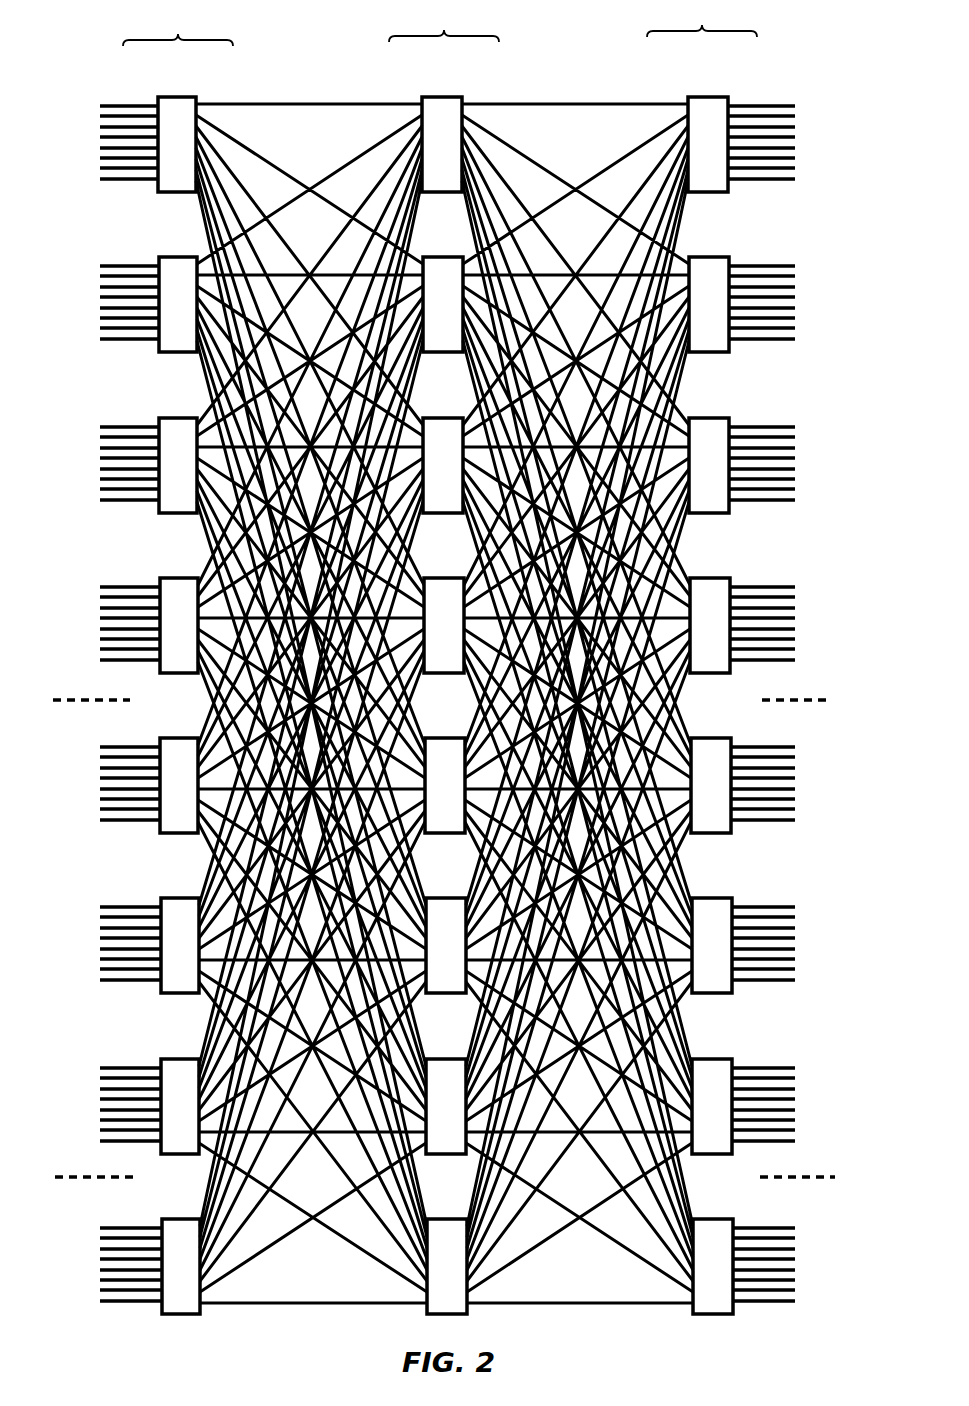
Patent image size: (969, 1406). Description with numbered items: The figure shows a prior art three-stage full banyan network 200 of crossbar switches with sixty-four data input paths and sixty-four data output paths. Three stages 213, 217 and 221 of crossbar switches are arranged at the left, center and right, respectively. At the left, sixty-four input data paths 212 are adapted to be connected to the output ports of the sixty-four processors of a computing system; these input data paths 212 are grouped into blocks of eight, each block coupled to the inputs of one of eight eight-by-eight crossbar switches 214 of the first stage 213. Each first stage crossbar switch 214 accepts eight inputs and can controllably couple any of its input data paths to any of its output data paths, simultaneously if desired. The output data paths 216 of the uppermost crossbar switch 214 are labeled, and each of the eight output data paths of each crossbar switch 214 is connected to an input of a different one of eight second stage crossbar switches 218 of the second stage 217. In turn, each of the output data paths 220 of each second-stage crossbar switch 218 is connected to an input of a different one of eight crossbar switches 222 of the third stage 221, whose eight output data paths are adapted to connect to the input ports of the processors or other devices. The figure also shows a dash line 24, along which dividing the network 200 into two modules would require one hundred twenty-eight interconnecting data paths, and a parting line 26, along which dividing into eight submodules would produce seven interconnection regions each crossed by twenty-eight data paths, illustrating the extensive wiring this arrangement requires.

The banyan network 200 is at (817, 1109).
The input data paths 212 is at (100, 107).
The first stage 213 is at (171, 659).
The first stage crossbar switch 214 is at (170, 96).
The output data paths 216 is at (343, 103).
The second stage 217 is at (447, 657).
The second stage crossbar switch 218 is at (446, 97).
The output data paths 220 is at (532, 103).
The third stage 221 is at (721, 657).
The third stage crossbar switch 222 is at (718, 97).
The dash line 24 is at (800, 700).
The parting line 26 is at (813, 1177).